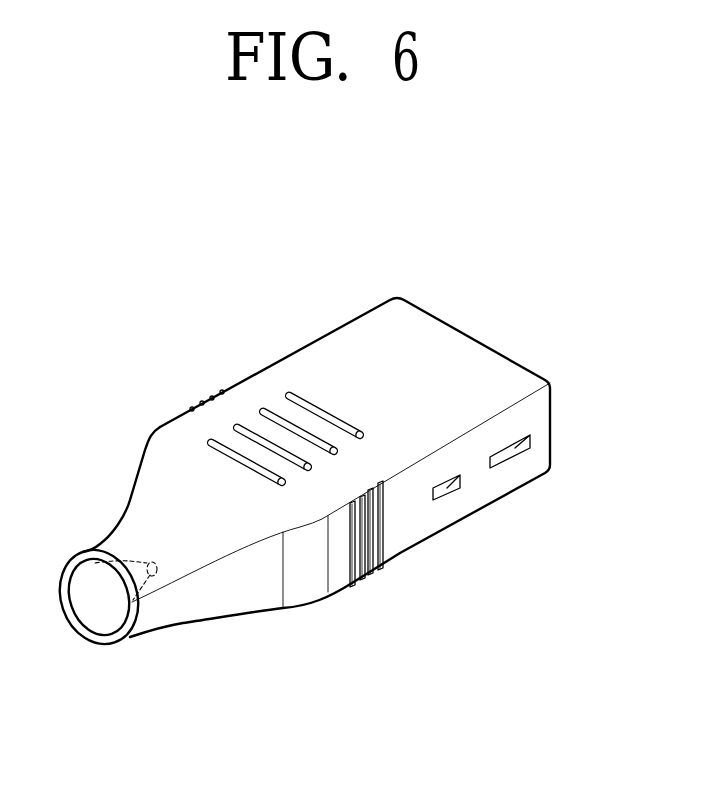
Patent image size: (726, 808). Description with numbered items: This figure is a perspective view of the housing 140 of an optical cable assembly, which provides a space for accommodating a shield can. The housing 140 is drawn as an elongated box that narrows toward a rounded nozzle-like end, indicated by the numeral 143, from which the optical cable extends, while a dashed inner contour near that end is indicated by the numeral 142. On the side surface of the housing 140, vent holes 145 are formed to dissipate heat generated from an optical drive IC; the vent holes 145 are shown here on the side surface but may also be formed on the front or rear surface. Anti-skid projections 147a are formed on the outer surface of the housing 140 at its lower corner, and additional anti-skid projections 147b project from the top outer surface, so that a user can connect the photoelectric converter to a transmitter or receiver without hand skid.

The housing 140 is at (341, 297).
The inlet port 142 is at (157, 567).
The nozzle ring 143 is at (112, 632).
The vent hole 145 is at (450, 487).
The anti-skid projections 147a is at (355, 585).
The anti-skid projections 147b is at (222, 445).